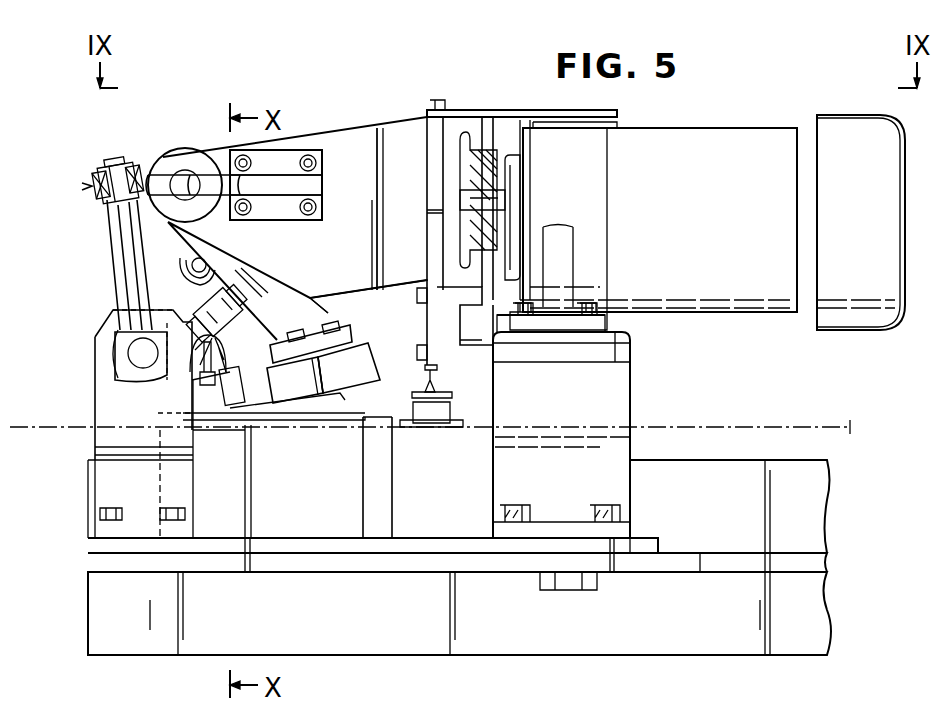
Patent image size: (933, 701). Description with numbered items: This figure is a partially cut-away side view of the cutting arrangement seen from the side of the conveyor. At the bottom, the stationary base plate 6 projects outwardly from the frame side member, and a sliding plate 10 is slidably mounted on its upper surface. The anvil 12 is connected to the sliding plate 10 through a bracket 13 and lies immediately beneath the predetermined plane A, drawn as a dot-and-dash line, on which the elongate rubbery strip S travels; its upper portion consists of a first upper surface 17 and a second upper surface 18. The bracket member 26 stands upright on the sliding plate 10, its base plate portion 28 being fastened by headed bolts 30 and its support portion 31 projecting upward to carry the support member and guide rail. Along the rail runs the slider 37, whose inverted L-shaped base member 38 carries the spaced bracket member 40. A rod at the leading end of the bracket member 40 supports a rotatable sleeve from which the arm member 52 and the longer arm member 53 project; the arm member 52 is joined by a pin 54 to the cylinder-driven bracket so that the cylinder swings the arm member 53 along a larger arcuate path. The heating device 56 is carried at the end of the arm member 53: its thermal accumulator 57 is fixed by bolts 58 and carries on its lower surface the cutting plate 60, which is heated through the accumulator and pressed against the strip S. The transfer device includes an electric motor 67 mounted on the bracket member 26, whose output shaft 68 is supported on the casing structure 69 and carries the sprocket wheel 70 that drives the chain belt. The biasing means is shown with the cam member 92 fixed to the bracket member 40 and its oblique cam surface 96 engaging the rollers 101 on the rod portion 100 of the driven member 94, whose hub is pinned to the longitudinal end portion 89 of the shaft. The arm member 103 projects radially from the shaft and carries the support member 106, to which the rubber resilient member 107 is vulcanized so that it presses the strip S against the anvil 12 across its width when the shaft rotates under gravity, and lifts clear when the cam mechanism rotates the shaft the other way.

The stationary base plate 6 is at (787, 553).
The sliding plate 10 is at (660, 544).
The anvil 12 is at (360, 410).
The bracket 13 is at (362, 455).
The first upper surface 17 is at (216, 427).
The second upper surface 18 is at (328, 406).
The bracket member 26 is at (634, 490).
The base plate portion 28 is at (632, 533).
The headed bolts 30 is at (598, 505).
The support portion 31 is at (632, 380).
The slider 37 is at (387, 125).
The inverted L-shaped base member 38 is at (522, 110).
The bracket member 40 is at (355, 133).
The arm member 52 is at (190, 252).
The arm member 53 is at (312, 300).
The pin 54 is at (186, 276).
The heating device 56 is at (352, 320).
The thermal accumulator 57 is at (365, 345).
The bolts 58 is at (322, 326).
The cutting plate 60 is at (256, 408).
The electric motor 67 is at (737, 122).
The output shaft 68 is at (500, 198).
The casing structure 69 is at (698, 128).
The sprocket wheel 70 is at (475, 150).
The longitudinal end portion 89 is at (138, 365).
The cam member 92 is at (324, 186).
The driven member 94 is at (118, 158).
The cam surface 96 is at (172, 180).
The rod portion 100 is at (120, 283).
The rollers 101 is at (97, 182).
The arm member 103 is at (231, 309).
The support member 106 is at (265, 375).
The resilient member 107 is at (208, 390).
The elongate rubbery strip S is at (715, 427).
The predetermined plane A is at (850, 427).